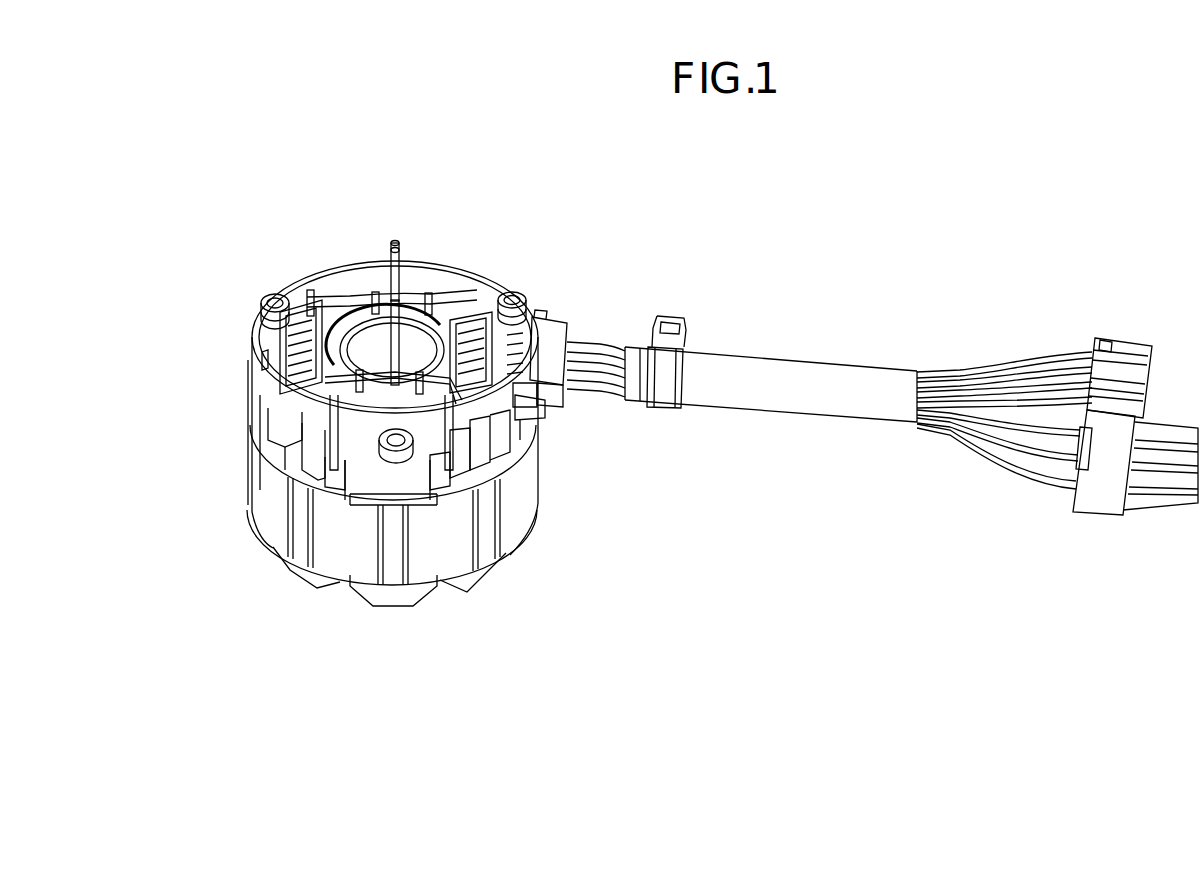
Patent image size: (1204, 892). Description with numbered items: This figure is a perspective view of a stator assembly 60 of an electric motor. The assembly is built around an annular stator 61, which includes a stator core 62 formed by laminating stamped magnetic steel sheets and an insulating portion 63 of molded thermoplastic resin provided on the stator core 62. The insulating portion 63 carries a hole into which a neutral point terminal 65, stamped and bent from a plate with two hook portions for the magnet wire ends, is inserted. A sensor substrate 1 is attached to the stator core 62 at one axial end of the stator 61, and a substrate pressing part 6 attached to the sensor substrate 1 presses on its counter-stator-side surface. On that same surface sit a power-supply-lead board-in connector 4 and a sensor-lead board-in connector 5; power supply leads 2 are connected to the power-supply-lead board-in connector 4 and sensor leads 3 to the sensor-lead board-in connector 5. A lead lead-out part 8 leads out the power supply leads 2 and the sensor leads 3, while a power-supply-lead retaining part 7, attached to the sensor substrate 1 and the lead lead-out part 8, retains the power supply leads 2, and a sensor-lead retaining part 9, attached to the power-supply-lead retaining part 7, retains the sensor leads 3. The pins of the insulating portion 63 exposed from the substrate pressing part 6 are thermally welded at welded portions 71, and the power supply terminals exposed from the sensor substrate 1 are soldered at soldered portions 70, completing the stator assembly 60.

The sensor substrate 1 is at (352, 280).
The power supply leads 2 is at (362, 480).
The sensor leads 3 is at (522, 300).
The power-supply-lead board-in connector 4 is at (305, 286).
The sensor-lead board-in connector 5 is at (498, 298).
The substrate pressing part 6 is at (398, 270).
The power-supply-lead retaining part 7 is at (566, 420).
The lead lead-out part 8 is at (576, 402).
The sensor-lead retaining part 9 is at (553, 340).
The stator assembly 60 is at (624, 248).
The stator 61 is at (277, 517).
The stator core 62 is at (507, 497).
The insulating portion 63 is at (497, 490).
The neutral point terminal 65 is at (270, 441).
The soldered portions 70 is at (540, 452).
The welded portions 71 is at (286, 298).